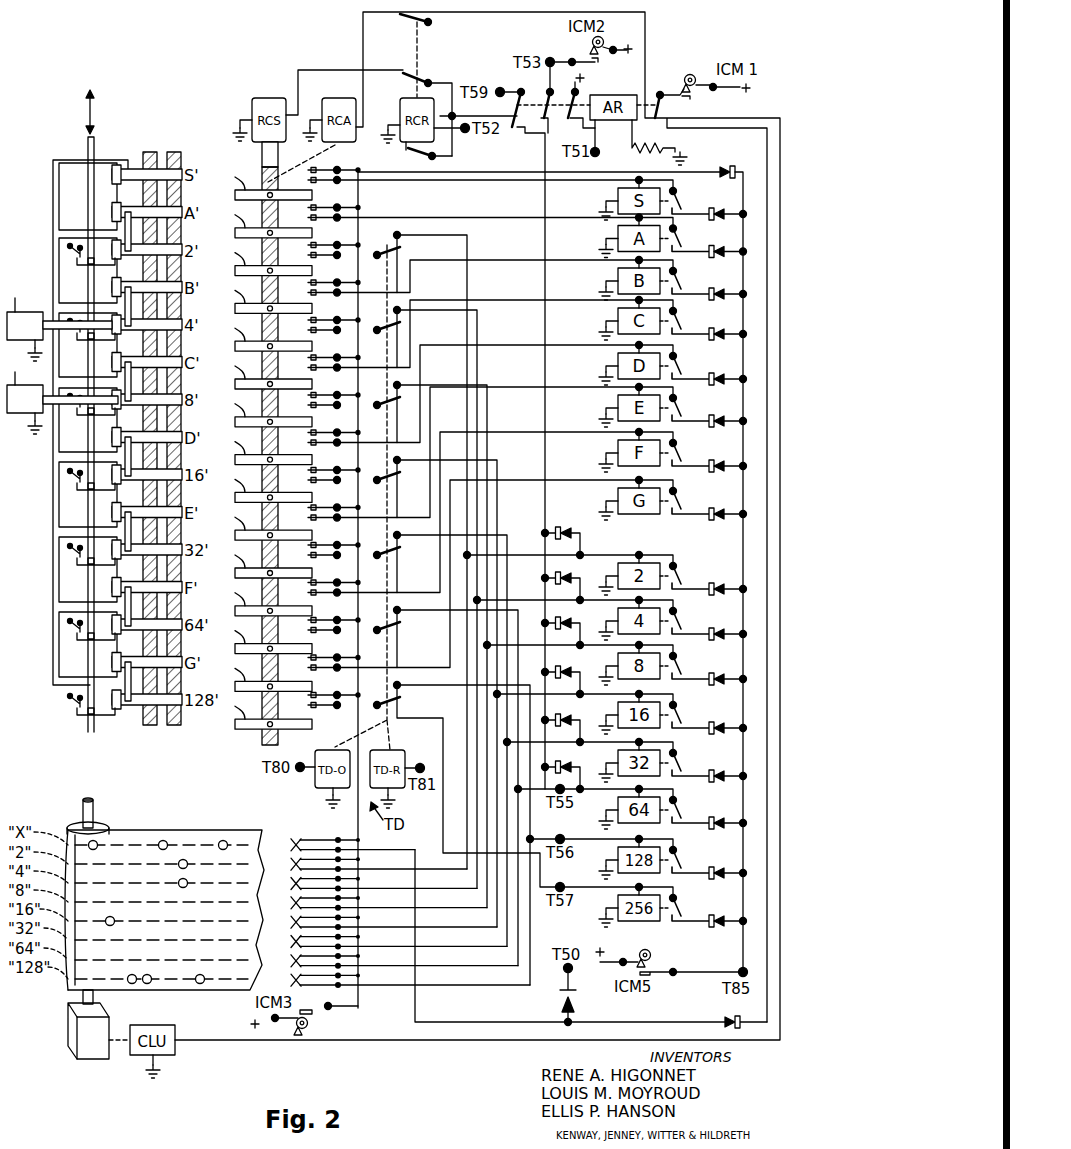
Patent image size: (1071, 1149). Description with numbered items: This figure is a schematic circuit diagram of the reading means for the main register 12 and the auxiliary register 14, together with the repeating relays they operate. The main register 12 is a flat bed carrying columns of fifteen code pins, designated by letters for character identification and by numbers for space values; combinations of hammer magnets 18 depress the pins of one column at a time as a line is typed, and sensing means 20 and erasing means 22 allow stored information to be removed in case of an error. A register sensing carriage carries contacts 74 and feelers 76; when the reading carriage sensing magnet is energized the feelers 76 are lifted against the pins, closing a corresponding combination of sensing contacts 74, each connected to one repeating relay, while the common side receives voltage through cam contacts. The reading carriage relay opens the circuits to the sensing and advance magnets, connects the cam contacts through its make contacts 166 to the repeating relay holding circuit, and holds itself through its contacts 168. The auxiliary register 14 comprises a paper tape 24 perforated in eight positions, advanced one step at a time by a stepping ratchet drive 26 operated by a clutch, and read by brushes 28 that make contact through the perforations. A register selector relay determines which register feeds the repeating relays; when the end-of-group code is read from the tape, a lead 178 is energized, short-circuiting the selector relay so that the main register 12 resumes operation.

The main register 12 is at (163, 148).
The auxiliary register 14 is at (153, 826).
The hammer magnets 18 is at (62, 366).
The sensing means 20 is at (88, 137).
The erasing means 22 is at (56, 179).
The paper tape 24 is at (205, 834).
The stepping ratchet drive 26 is at (88, 1031).
The brushes 28 is at (298, 836).
The sensing contacts 74 is at (346, 171).
The feelers 76 is at (244, 227).
The make contacts 166 is at (442, 161).
The contacts 168 is at (420, 80).
The lead 178 is at (514, 1022).